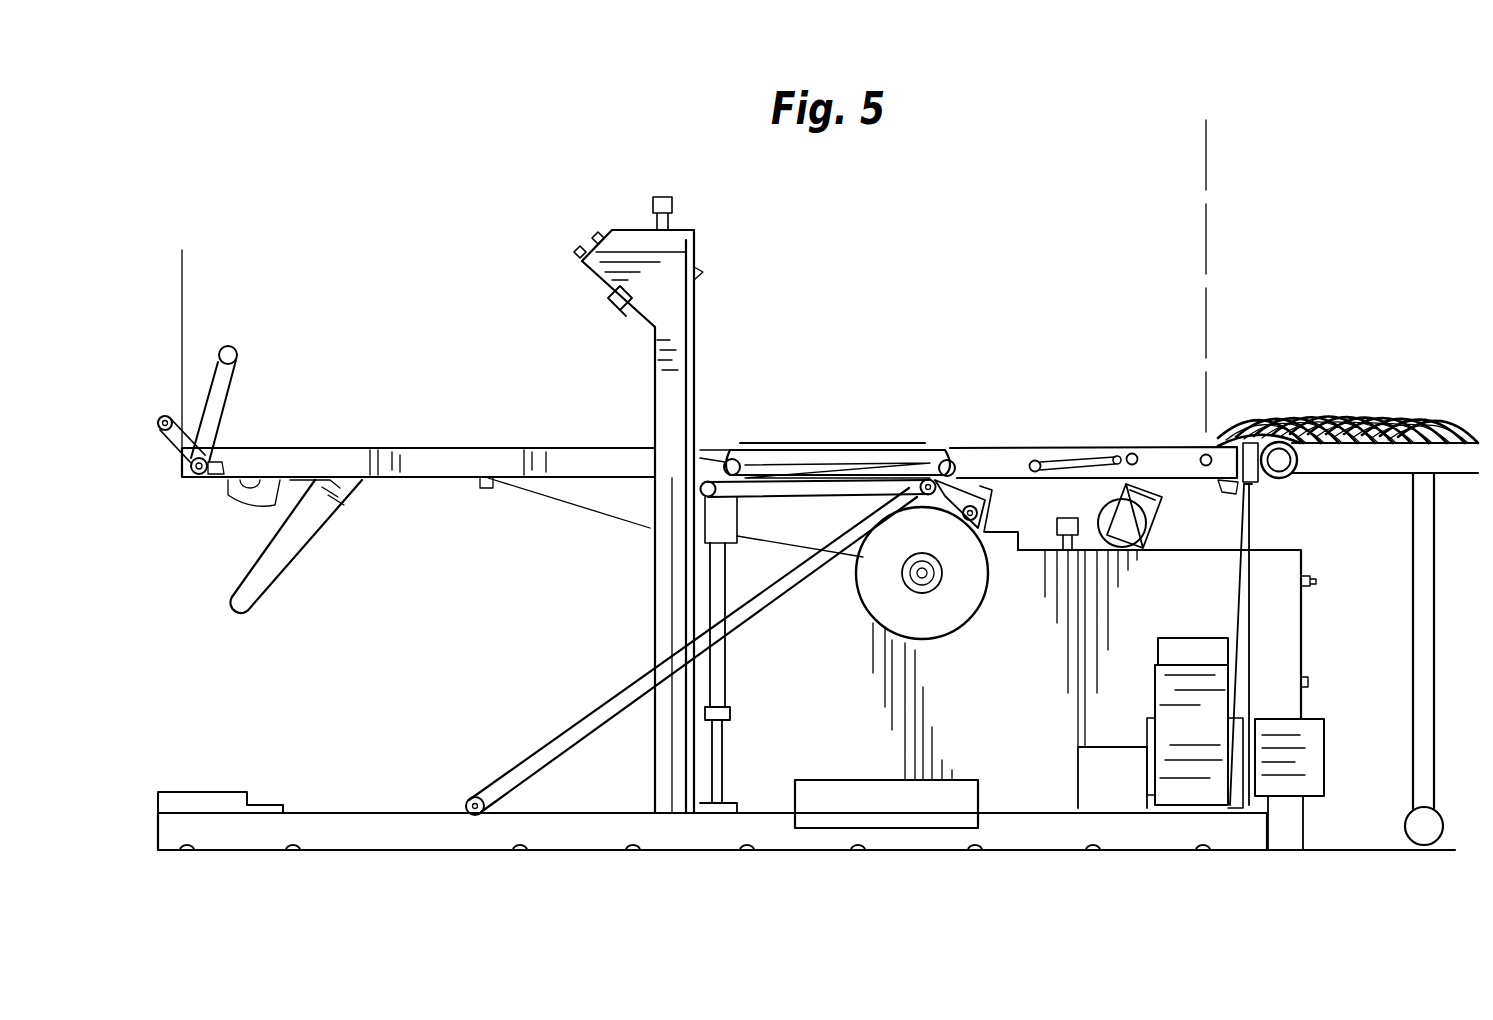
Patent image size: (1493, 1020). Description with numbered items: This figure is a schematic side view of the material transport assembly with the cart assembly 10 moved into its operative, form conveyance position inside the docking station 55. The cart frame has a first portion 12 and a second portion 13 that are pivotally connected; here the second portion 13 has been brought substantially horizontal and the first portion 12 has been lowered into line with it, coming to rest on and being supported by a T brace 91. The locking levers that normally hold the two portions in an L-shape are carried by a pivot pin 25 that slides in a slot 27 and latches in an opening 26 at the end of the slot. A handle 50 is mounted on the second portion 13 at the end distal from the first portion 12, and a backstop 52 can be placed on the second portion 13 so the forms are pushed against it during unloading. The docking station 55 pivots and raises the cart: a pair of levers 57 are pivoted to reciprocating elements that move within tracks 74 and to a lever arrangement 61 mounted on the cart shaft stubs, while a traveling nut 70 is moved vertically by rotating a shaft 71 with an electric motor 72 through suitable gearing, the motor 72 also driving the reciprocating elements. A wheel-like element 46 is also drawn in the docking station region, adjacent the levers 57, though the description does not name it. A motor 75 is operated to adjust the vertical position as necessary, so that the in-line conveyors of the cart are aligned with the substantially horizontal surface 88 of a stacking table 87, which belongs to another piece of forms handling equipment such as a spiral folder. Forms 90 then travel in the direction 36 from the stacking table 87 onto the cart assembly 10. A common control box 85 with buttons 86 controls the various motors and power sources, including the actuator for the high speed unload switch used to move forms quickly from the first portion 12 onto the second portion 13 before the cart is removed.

The cart assembly 10 is at (415, 268).
The first portion 12 is at (1170, 440).
The second portion 13 is at (405, 430).
The pivot pin 25 is at (1040, 455).
The opening 26 is at (1131, 454).
The slot 27 is at (1062, 462).
The directional arrow 36 is at (1320, 372).
The cutting wheel 46 is at (958, 612).
The handle 50 is at (270, 572).
The backstop 52 is at (182, 250).
The docking station 55 is at (740, 315).
The lever 57 is at (515, 772).
The lever arrangement 61 is at (797, 440).
The traveling nut 70 is at (712, 447).
The shaft 71 is at (726, 758).
The motor 72 is at (1312, 760).
The track 74 is at (332, 820).
The motor 75 is at (1150, 680).
The common control box 85 is at (612, 222).
The buttons 86 is at (590, 231).
The stacking table 87 is at (1353, 480).
The horizontal surface 88 is at (1446, 420).
The forms 90 is at (1352, 405).
The T brace 91 is at (1254, 599).